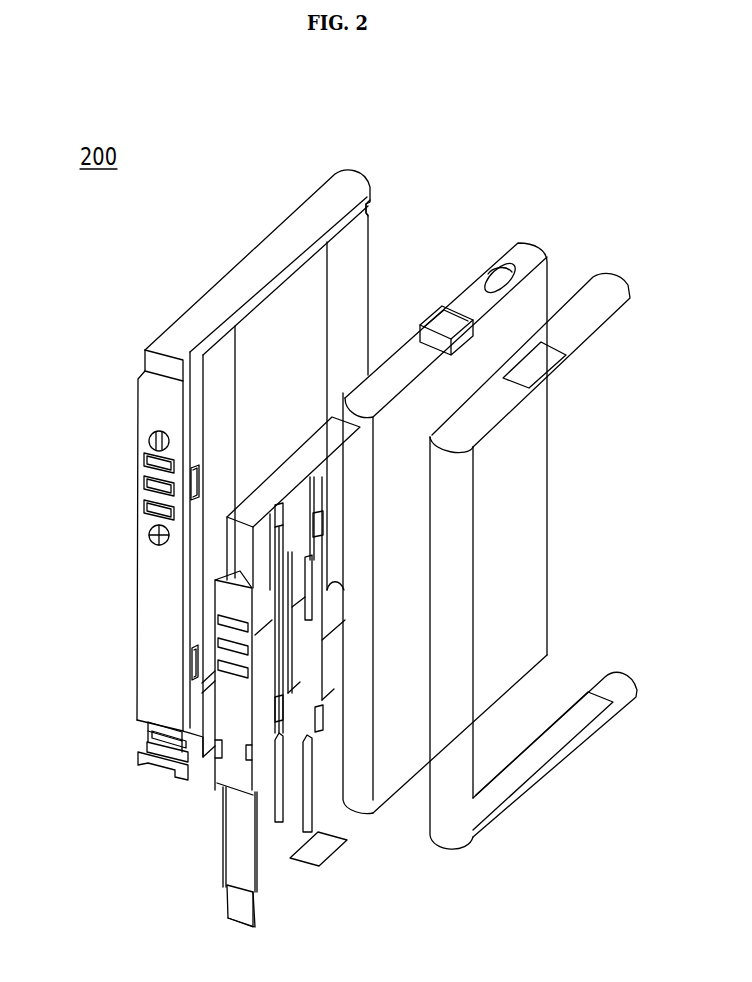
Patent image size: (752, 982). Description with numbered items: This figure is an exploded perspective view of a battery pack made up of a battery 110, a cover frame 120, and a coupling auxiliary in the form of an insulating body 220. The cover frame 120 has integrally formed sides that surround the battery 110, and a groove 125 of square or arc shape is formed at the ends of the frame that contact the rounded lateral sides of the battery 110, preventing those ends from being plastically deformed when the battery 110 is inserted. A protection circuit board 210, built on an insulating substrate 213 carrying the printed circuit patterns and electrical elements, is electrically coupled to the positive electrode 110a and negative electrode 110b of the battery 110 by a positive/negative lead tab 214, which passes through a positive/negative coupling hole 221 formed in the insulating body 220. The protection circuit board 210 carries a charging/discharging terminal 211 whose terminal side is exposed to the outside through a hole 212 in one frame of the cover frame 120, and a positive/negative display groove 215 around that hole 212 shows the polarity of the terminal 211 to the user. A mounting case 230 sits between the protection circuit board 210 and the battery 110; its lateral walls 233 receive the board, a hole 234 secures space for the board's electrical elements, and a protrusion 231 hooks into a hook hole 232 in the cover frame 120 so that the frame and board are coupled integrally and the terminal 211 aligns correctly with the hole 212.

The battery 110 is at (475, 524).
The positive electrode 110a is at (410, 780).
The negative electrode 110b is at (445, 325).
The cover frame 120 is at (342, 163).
The groove 125 is at (379, 204).
The protection circuit board 210 is at (196, 690).
The charging/discharging terminal 211 is at (228, 612).
The hole 212 is at (149, 487).
The insulating substrate 213 is at (165, 745).
The positive/negative lead tab 214 is at (237, 570).
The positive/negative display groove 215 is at (149, 443).
The insulating body 220 is at (559, 536).
The positive/negative coupling hole 221 is at (532, 364).
The mounting case 230 is at (446, 725).
The protrusion 231 is at (318, 708).
The hook hole 232 is at (200, 665).
The lateral walls 233 is at (304, 840).
The hole 234 is at (300, 641).